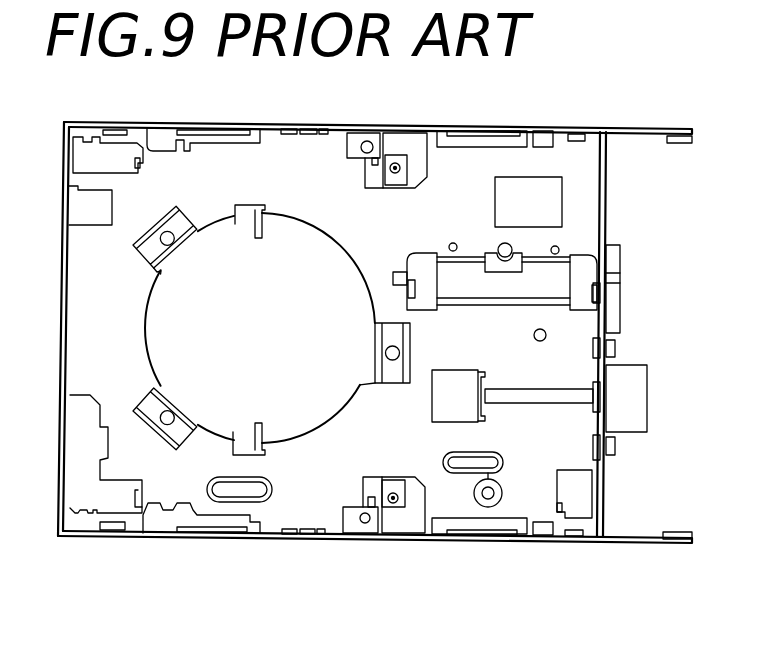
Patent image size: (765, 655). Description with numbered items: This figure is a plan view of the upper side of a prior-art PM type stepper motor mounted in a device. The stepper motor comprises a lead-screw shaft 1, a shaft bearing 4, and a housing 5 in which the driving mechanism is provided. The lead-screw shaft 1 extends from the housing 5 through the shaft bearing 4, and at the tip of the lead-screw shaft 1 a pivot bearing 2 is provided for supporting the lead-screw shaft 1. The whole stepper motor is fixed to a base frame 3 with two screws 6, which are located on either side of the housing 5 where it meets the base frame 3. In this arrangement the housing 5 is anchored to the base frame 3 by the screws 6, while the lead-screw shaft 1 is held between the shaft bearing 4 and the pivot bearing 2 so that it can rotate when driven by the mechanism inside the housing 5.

The lead-screw shaft 1 is at (543, 398).
The pivot bearing 2 is at (478, 393).
The base frame 3 is at (405, 538).
The shaft bearing 4 is at (594, 385).
The housing 5 is at (640, 383).
The screws 6 is at (616, 348).